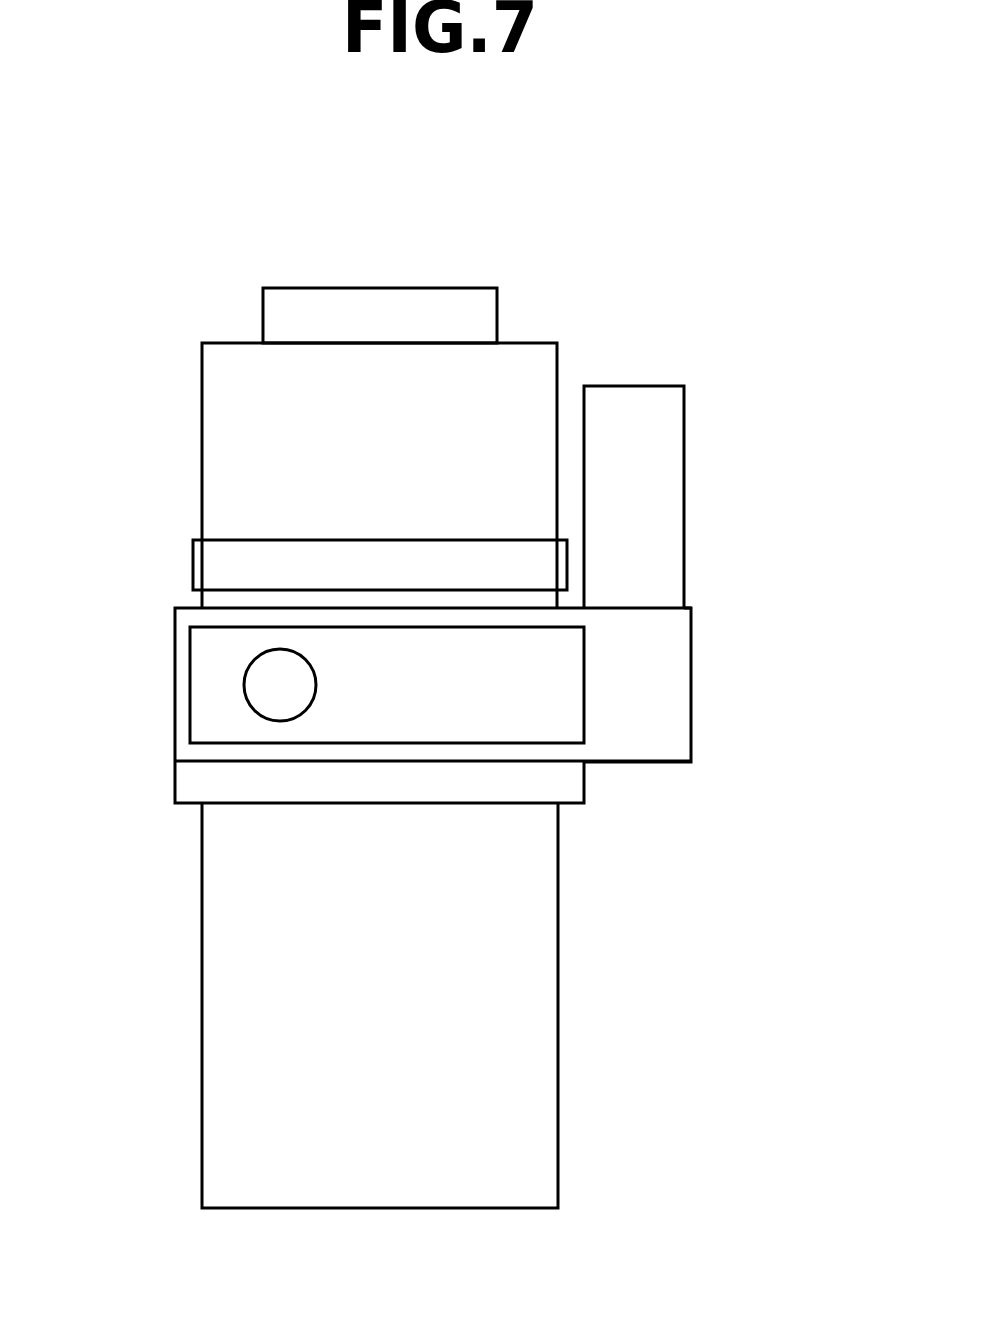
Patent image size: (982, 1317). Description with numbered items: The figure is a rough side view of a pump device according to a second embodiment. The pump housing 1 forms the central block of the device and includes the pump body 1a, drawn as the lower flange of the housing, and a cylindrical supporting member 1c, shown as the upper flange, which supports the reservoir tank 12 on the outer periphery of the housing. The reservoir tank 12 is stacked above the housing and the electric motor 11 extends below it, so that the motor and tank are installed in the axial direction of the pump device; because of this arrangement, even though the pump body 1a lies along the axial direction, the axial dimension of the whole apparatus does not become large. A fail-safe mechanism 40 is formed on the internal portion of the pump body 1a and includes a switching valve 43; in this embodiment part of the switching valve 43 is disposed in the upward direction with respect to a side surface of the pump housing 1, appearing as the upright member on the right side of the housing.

The pump housing 1 is at (173, 709).
The pump body 1a is at (211, 749).
The cylindrical supporting member 1c is at (209, 600).
The electric motor 11 is at (556, 1018).
The reservoir tank 12 is at (211, 455).
The fail-safe mechanism 40 is at (690, 577).
The switching valve 43 is at (668, 448).